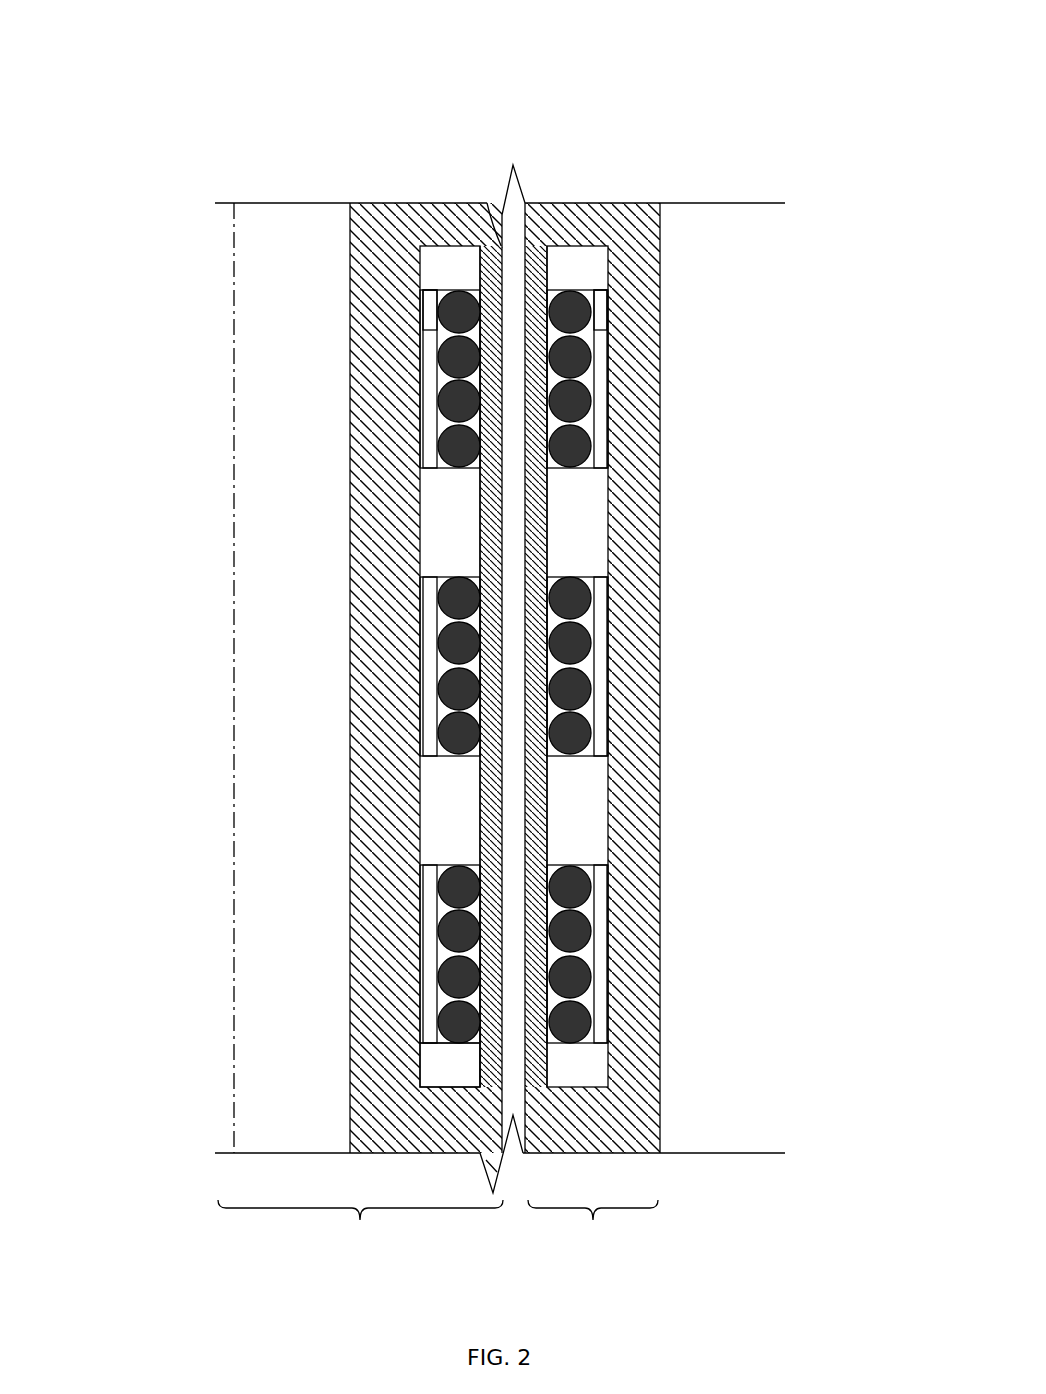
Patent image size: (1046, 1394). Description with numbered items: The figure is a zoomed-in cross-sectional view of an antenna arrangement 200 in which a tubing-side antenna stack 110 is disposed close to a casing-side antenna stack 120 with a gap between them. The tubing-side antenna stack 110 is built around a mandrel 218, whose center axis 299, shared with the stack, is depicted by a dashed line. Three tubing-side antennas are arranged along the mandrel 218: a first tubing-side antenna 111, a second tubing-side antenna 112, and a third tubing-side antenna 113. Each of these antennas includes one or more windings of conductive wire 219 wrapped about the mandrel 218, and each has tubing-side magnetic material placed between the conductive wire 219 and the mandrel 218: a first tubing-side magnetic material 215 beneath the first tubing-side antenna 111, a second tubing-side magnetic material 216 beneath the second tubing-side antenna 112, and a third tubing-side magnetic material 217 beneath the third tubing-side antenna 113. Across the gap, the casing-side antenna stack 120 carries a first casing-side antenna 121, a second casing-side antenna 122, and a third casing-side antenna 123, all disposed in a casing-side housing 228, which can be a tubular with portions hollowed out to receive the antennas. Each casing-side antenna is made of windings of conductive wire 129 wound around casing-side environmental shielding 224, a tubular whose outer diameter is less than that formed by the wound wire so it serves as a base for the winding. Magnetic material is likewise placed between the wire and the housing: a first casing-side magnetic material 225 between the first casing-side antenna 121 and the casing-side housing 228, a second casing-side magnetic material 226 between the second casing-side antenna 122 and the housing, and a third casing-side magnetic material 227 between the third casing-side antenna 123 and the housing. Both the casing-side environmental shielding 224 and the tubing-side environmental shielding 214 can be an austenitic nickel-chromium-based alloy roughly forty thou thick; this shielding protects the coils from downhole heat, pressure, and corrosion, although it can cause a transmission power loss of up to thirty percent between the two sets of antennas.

The actuator assembly 200 is at (214, 38).
The tubing-side antenna stack 110 is at (321, 704).
The casing-side antenna stack 120 is at (662, 701).
The first tubing-side antenna 111 is at (450, 290).
The second tubing-side antenna 112 is at (458, 577).
The third tubing-side antenna 113 is at (457, 865).
The first casing-side antenna 121 is at (576, 468).
The second casing-side antenna 122 is at (578, 757).
The third casing-side antenna 123 is at (578, 1045).
The conductive wire 129 is at (594, 308).
The tubing-side environmental shielding 214 is at (478, 1072).
The first tubing-side magnetic material 215 is at (425, 395).
The second tubing-side magnetic material 216 is at (437, 680).
The third tubing-side magnetic material 217 is at (433, 985).
The mandrel 218 is at (352, 258).
The conductive wire 219 is at (425, 315).
The casing-side environmental shielding 224 is at (534, 256).
The first casing-side magnetic material 225 is at (604, 397).
The second casing-side magnetic material 226 is at (604, 667).
The third casing-side magnetic material 227 is at (603, 945).
The casing-side housing 228 is at (643, 733).
The center axis 299 is at (231, 455).